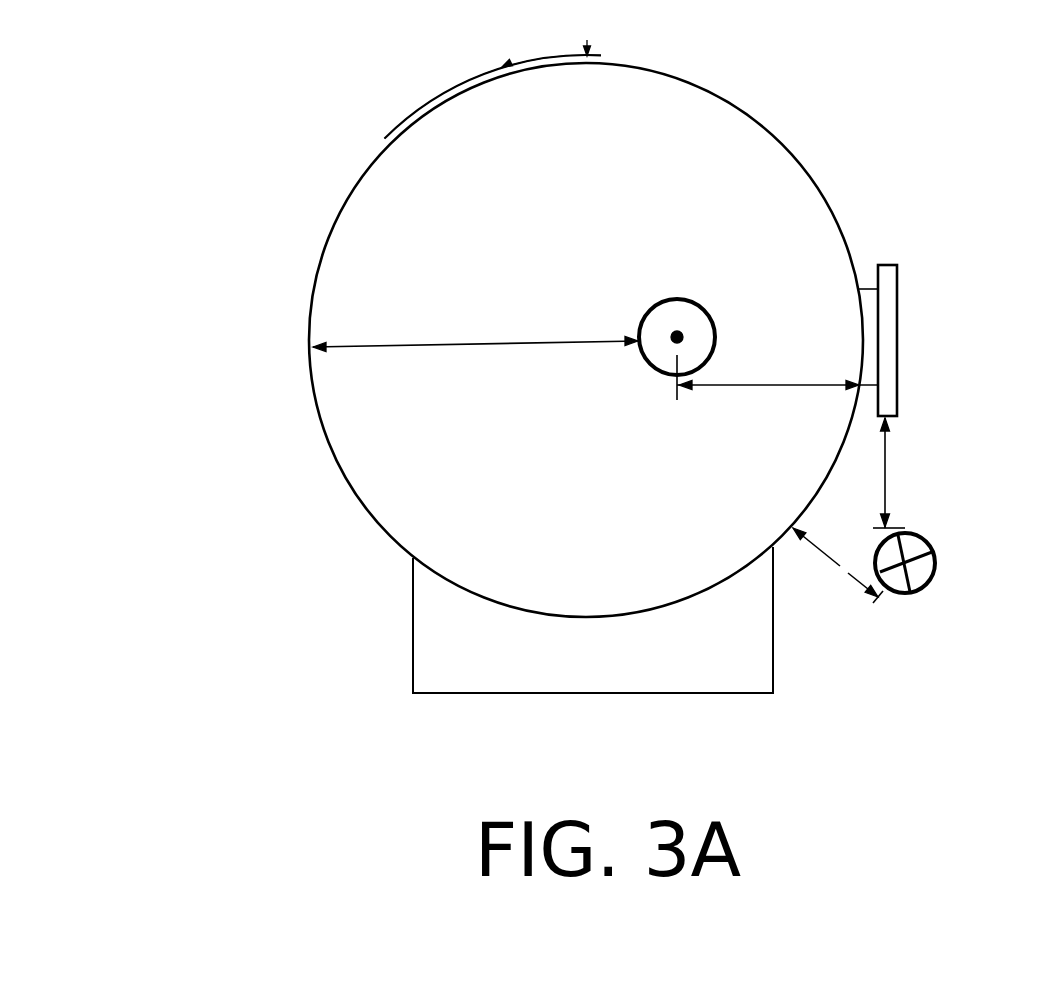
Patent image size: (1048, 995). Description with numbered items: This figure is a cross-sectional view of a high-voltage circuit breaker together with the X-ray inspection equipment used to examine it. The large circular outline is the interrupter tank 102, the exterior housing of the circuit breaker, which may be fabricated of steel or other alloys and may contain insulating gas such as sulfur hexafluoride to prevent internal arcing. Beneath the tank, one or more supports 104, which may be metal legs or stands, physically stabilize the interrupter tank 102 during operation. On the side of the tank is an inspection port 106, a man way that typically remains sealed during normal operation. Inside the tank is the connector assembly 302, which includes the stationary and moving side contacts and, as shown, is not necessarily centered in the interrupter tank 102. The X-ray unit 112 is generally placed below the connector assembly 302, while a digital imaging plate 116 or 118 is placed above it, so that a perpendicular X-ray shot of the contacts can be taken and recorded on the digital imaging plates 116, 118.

The interrupter tank 102 is at (333, 233).
The supports 104 is at (588, 695).
The inspection port 106 is at (897, 344).
The X-ray unit 112 is at (939, 565).
The digital imaging plate 116 is at (421, 104).
The digital imaging plate 118 is at (493, 96).
The connector assembly 302 is at (673, 320).